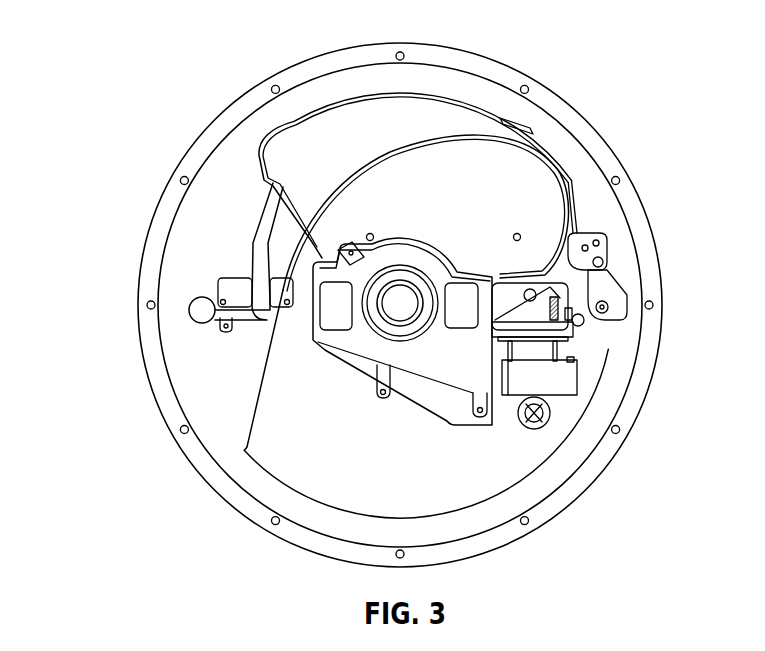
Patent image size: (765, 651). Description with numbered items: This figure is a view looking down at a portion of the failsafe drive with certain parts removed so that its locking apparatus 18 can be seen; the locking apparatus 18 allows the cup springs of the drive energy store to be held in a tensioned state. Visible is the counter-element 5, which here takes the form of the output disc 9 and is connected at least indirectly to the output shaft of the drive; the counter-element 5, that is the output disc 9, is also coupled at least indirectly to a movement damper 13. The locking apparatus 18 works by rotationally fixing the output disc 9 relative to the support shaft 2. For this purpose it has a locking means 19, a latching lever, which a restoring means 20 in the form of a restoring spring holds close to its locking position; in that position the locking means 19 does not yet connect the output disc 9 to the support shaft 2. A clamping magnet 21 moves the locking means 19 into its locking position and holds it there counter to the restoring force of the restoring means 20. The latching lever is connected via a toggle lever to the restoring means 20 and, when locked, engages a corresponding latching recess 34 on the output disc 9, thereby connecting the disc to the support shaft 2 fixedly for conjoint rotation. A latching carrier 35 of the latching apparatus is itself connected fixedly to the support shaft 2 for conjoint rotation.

The support shaft 2 is at (397, 282).
The counter-element 5 is at (635, 403).
The output disc 9 is at (645, 365).
The movement damper 13 is at (233, 360).
The locking apparatus 18 is at (98, 251).
The locking means 19 is at (605, 290).
The restoring means 20 is at (587, 240).
The clamping magnet 21 is at (545, 383).
The latching recess 34 is at (627, 307).
The latching carrier 35 is at (285, 320).